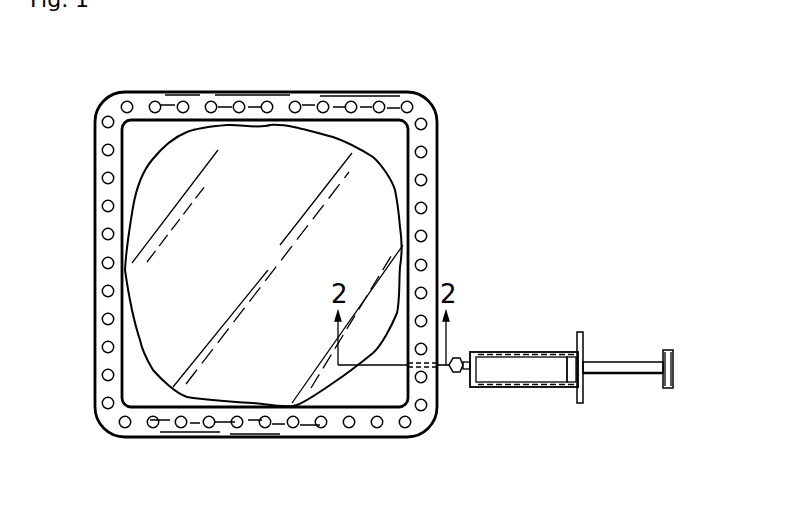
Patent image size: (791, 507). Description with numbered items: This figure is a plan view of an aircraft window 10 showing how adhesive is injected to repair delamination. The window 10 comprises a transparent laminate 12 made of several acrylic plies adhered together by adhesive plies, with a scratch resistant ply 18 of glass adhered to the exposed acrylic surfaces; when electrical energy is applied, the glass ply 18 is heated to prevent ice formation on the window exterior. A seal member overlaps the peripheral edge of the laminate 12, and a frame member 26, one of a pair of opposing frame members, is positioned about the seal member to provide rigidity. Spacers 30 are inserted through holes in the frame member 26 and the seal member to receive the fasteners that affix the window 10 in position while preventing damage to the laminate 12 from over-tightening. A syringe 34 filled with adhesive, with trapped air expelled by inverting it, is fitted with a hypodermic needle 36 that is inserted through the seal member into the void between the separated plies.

The aircraft window 10 is at (443, 154).
The transparent laminate 12 is at (253, 219).
The scratch resistant ply 18 is at (385, 228).
The frame member 26 is at (424, 254).
The spacers 30 is at (426, 264).
The syringe 34 is at (485, 389).
The hypodermic needle 36 is at (455, 357).